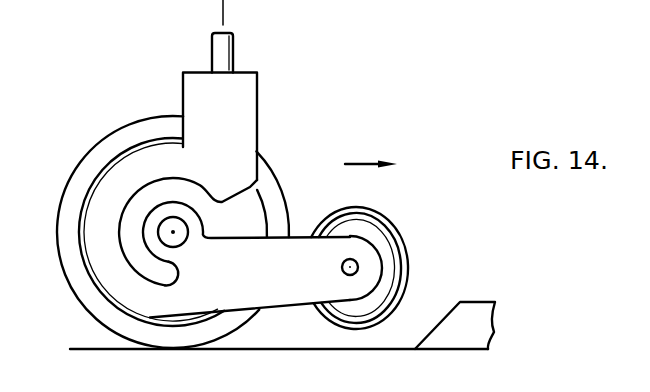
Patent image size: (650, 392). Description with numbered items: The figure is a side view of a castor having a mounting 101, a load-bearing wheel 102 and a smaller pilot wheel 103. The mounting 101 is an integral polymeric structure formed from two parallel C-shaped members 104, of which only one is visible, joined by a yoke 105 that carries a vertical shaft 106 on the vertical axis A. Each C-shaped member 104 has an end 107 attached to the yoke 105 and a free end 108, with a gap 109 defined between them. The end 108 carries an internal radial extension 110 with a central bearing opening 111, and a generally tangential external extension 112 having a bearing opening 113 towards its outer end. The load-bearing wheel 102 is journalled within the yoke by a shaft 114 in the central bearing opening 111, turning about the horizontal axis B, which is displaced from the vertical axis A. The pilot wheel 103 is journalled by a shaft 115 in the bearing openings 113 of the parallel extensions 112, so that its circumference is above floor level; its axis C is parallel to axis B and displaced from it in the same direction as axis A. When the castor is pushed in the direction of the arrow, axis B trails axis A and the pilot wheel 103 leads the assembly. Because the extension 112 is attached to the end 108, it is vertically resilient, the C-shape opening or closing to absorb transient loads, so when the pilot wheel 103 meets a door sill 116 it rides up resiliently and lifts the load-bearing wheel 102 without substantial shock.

The vertical axis A is at (229, 14).
The load-bearing wheel axis B is at (173, 232).
The pilot wheel axis C is at (362, 273).
The mounting 101 is at (262, 133).
The load-bearing wheel 102 is at (85, 280).
The pilot wheel 103 is at (388, 229).
The C-shaped member 104 is at (112, 196).
The yoke 105 is at (240, 105).
The vertical shaft 106 is at (222, 57).
The end 107 is at (177, 160).
The end 108 is at (160, 306).
The gap 109 is at (250, 208).
The internal radial extension 110 is at (177, 257).
The central bearing opening 111 is at (158, 229).
The tangential external extension 112 is at (272, 300).
The bearing opening 113 is at (358, 266).
The shaft 114 is at (167, 237).
The shaft 115 is at (348, 260).
The door sill 116 is at (473, 312).